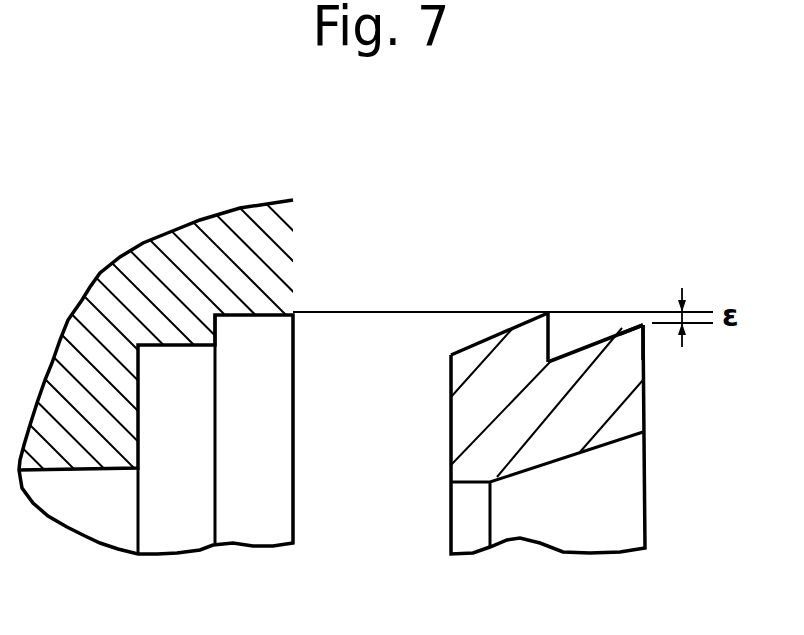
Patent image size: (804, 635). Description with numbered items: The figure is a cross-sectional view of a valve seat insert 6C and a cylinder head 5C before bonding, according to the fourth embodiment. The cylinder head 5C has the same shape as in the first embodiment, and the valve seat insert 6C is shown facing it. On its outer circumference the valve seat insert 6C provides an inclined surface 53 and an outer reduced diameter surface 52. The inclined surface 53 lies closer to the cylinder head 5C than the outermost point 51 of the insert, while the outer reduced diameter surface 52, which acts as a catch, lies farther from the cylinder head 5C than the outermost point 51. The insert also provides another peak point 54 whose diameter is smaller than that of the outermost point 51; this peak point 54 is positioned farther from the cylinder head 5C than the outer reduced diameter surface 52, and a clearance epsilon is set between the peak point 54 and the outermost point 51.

The cylinder head 5C is at (156, 292).
The valve seat insert 6C is at (595, 520).
The outermost point 51 is at (549, 312).
The outer reduced diameter surface 52 is at (598, 333).
The inclined surface 53 is at (487, 335).
The peak point 54 is at (645, 322).